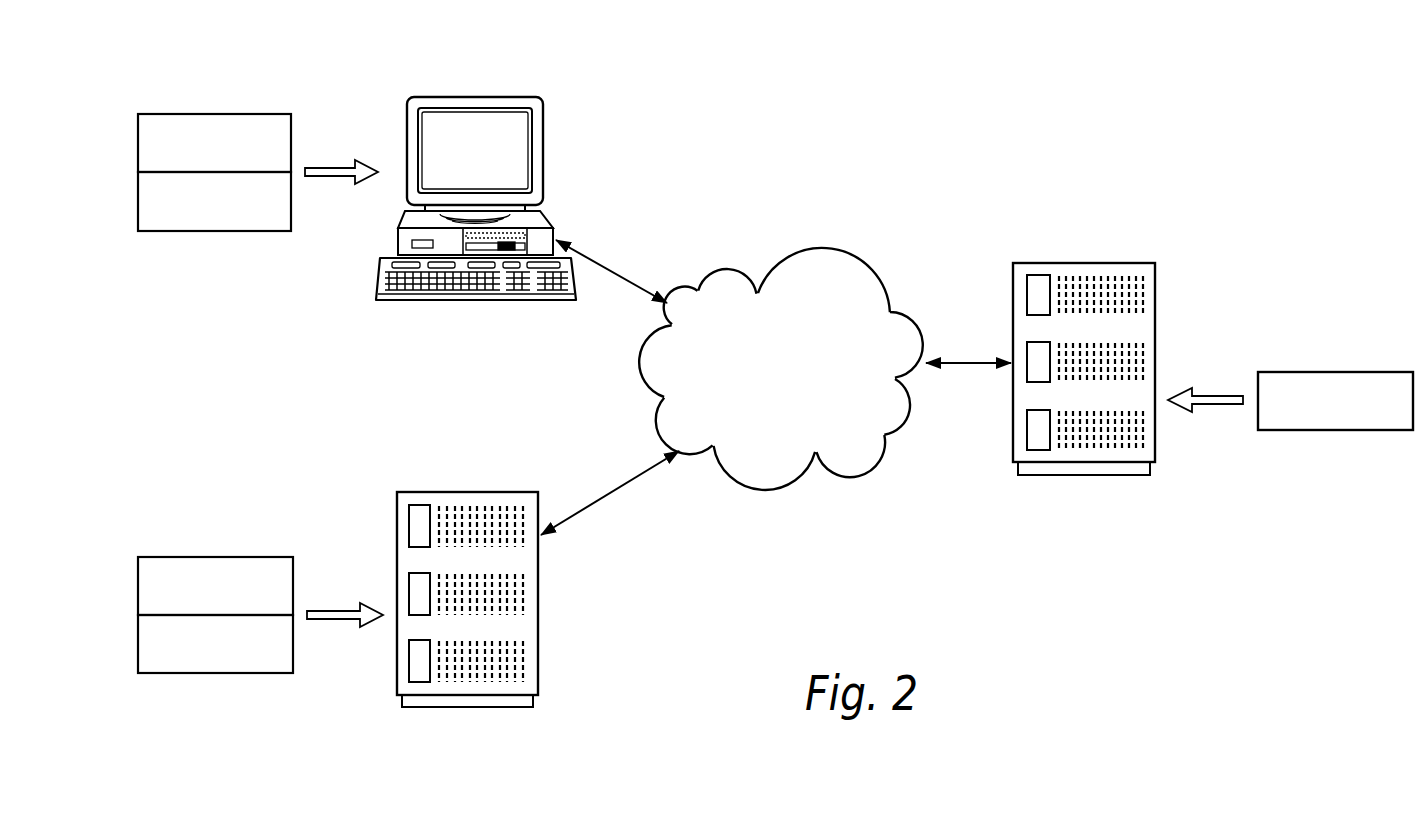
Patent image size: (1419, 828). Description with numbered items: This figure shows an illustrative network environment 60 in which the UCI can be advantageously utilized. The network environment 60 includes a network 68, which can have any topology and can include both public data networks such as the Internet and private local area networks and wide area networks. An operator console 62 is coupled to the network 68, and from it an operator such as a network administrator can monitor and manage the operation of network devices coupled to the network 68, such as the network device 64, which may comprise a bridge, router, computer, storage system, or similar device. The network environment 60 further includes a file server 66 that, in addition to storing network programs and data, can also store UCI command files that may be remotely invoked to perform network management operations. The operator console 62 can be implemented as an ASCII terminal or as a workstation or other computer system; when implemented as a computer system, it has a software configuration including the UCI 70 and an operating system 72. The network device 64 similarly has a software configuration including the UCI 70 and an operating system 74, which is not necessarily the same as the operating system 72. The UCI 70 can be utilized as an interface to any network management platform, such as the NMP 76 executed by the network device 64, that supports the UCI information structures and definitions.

The network environment 60 is at (960, 143).
The operator console 62 is at (561, 213).
The network device 64 is at (1163, 317).
The file server 66 is at (546, 616).
The network 68 is at (853, 432).
The UCI 70 is at (241, 114).
The operating system (OS) 72 is at (233, 231).
The operating system (OS) 74 is at (236, 673).
The network management platform (NMP) 76 is at (1360, 372).